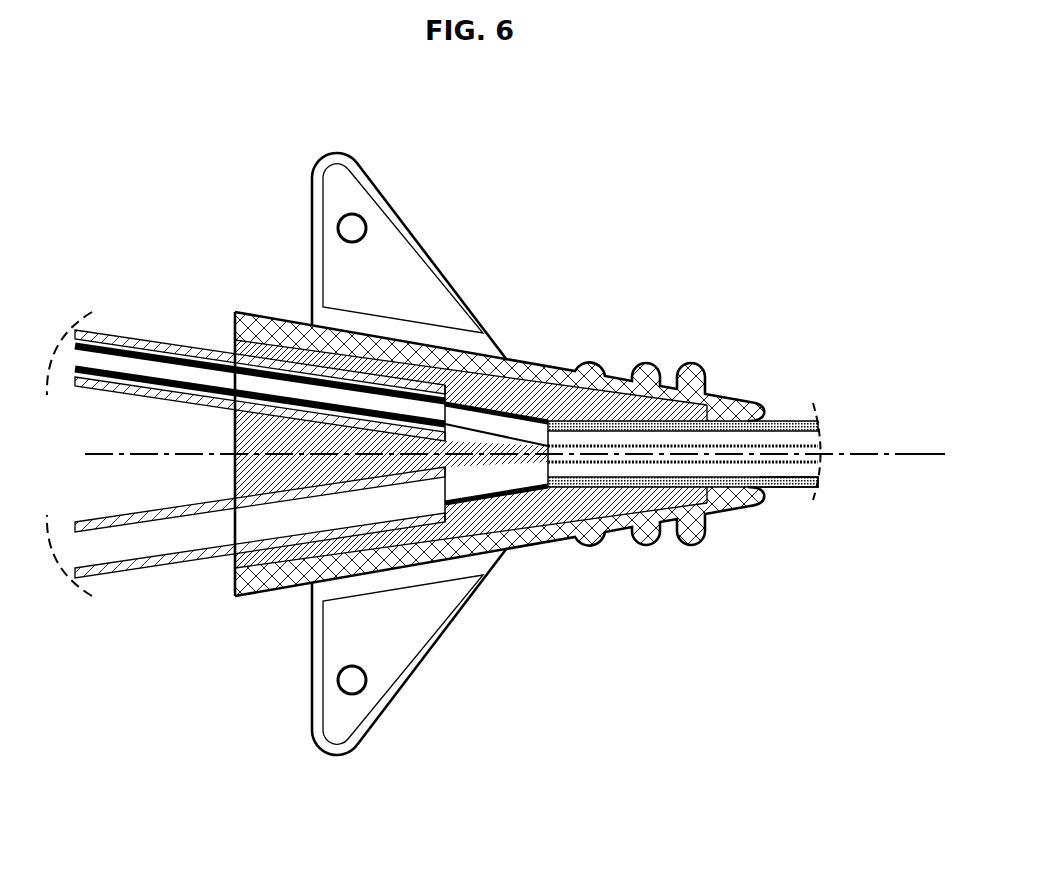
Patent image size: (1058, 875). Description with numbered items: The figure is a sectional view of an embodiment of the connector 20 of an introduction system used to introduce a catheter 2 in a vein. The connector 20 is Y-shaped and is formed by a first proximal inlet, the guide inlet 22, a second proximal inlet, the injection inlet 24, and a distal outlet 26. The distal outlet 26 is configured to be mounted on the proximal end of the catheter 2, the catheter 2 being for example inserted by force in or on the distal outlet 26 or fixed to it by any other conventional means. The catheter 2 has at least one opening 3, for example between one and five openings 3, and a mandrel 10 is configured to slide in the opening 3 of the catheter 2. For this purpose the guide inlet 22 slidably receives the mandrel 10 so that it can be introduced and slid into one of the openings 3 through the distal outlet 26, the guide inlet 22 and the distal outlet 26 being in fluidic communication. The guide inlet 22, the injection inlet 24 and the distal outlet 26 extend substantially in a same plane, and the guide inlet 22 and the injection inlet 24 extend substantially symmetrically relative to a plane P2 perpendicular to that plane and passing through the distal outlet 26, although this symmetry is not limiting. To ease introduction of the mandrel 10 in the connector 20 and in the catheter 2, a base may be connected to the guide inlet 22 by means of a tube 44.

The connector 20 is at (593, 229).
The guide inlet 22 is at (262, 343).
The injection inlet 24 is at (266, 570).
The tube 44 is at (163, 346).
The mandrel 10 is at (779, 441).
The opening 3 is at (806, 440).
The distal outlet 26 is at (732, 428).
The catheter 2 is at (791, 494).
The plane P2 is at (927, 450).